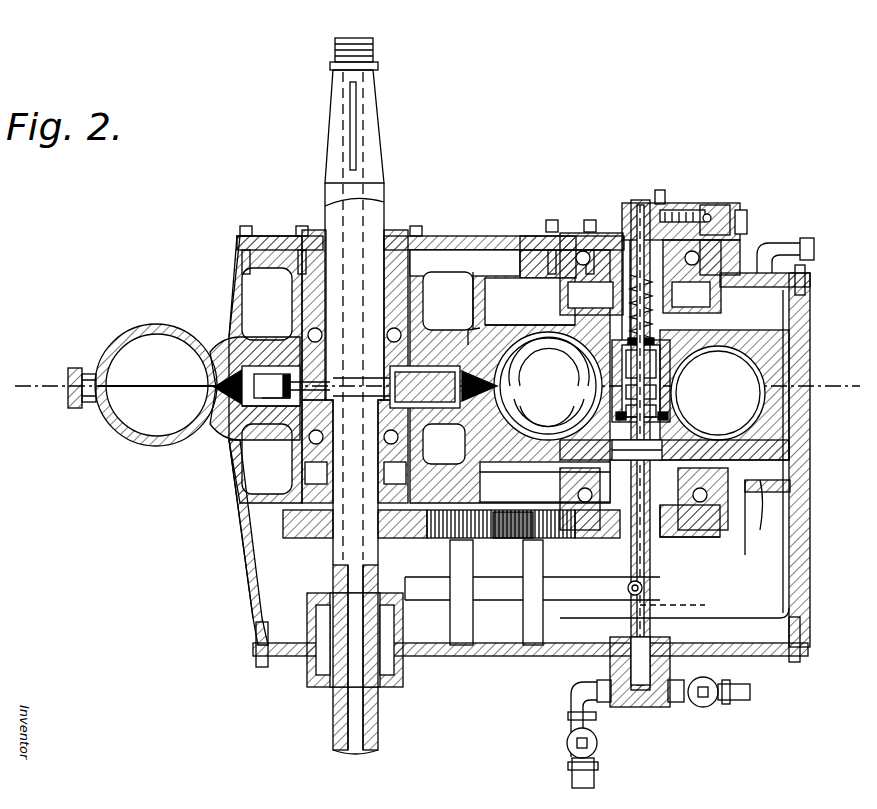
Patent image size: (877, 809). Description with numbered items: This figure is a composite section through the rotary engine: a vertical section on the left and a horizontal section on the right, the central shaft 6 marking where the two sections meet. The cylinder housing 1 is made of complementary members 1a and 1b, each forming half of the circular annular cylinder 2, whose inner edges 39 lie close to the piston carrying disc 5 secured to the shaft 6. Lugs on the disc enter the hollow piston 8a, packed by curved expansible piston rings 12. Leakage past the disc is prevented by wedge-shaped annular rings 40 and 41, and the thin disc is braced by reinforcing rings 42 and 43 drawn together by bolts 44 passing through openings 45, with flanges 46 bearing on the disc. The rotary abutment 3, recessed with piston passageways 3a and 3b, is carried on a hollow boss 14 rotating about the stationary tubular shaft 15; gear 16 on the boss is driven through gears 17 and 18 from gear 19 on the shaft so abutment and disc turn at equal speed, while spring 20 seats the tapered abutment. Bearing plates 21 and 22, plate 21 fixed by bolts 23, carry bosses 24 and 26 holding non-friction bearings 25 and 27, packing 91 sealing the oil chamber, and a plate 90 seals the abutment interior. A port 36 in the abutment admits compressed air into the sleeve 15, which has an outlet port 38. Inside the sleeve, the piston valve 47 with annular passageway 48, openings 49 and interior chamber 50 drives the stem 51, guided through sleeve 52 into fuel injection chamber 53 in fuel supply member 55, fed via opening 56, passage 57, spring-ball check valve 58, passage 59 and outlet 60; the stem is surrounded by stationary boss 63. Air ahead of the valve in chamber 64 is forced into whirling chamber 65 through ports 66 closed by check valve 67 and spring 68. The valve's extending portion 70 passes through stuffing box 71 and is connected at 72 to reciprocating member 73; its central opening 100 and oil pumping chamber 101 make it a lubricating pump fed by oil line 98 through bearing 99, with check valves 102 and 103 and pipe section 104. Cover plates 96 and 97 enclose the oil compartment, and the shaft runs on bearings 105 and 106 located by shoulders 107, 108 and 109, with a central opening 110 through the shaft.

The cylinder housing 1 is at (232, 539).
The housing member 1a is at (236, 280).
The housing member 1b is at (233, 480).
The circular annular cylinder 2 is at (135, 420).
The rotary abutment 3 is at (752, 465).
The piston passageway 3a is at (505, 325).
The piston passageway 3b is at (790, 342).
The piston carrying disc 5 is at (380, 378).
The central shaft 6 is at (385, 222).
The piston 8a is at (490, 488).
The piston rings 12 is at (522, 360).
The hollow boss 14 is at (655, 530).
The tubular shaft 15 is at (670, 370).
The gear 16 is at (710, 530).
The gear 17 is at (575, 538).
The gear 18 is at (432, 540).
The gear 19 is at (290, 540).
The spring 20 is at (722, 338).
The bearing plate 21 is at (765, 495).
The bearing plate 22 is at (770, 272).
The bolts 23 is at (495, 538).
The bosses 24 is at (722, 500).
The non-friction bearing 25 is at (690, 530).
The boss 26 is at (716, 302).
The non-friction bearing 27 is at (595, 236).
The port 36 is at (712, 388).
The outlet port 38 is at (592, 400).
The inner edges of the cylinder wall 39 is at (216, 426).
The annular ring 40 is at (258, 406).
The annular ring 41 is at (258, 366).
The reinforcing annular ring 42 is at (278, 406).
The reinforcing annular ring 43 is at (276, 366).
The bolts 44 is at (440, 366).
The openings 45 is at (440, 408).
The flanges 46 is at (462, 366).
The piston valve 47 is at (670, 414).
The annular passageway 48 is at (672, 392).
The openings 49 is at (575, 385).
The interior chamber 50 is at (612, 447).
The stem 51 is at (665, 405).
The sleeve 52 is at (670, 354).
The fuel injection chamber 53 is at (650, 230).
The fuel supply member 55 is at (700, 225).
The opening 56 is at (742, 255).
The passage 57 is at (668, 215).
The spring-ball check valve 58 is at (730, 210).
The passage 59 is at (660, 205).
The outlet 60 is at (638, 245).
The stationary boss 63 is at (795, 292).
The chamber 64 is at (580, 365).
The whirling chamber 65 is at (572, 292).
The ports 66 is at (626, 240).
The check valve 67 is at (524, 278).
The spring 68 is at (530, 340).
The extending portion 70 is at (660, 622).
The stuffing box 71 is at (618, 530).
The connection 72 is at (648, 590).
The reciprocating member 73 is at (582, 600).
The plate 90 is at (720, 430).
The packing 91 is at (578, 236).
The cover plate 96 is at (268, 238).
The cover plate 97 is at (292, 660).
The oil line 98 is at (572, 779).
The bearing 99 is at (612, 662).
The central opening 100 is at (705, 606).
The oil pumping chamber 101 is at (730, 445).
The check valve 102 is at (565, 742).
The check valve 103 is at (703, 707).
The pipe line section 104 is at (748, 700).
The non-friction bearing 105 is at (414, 330).
The non-friction bearing 106 is at (412, 462).
The shoulder 107 is at (425, 278).
The shoulder 108 is at (300, 490).
The shoulder 109 is at (412, 485).
The central opening 110 is at (335, 722).